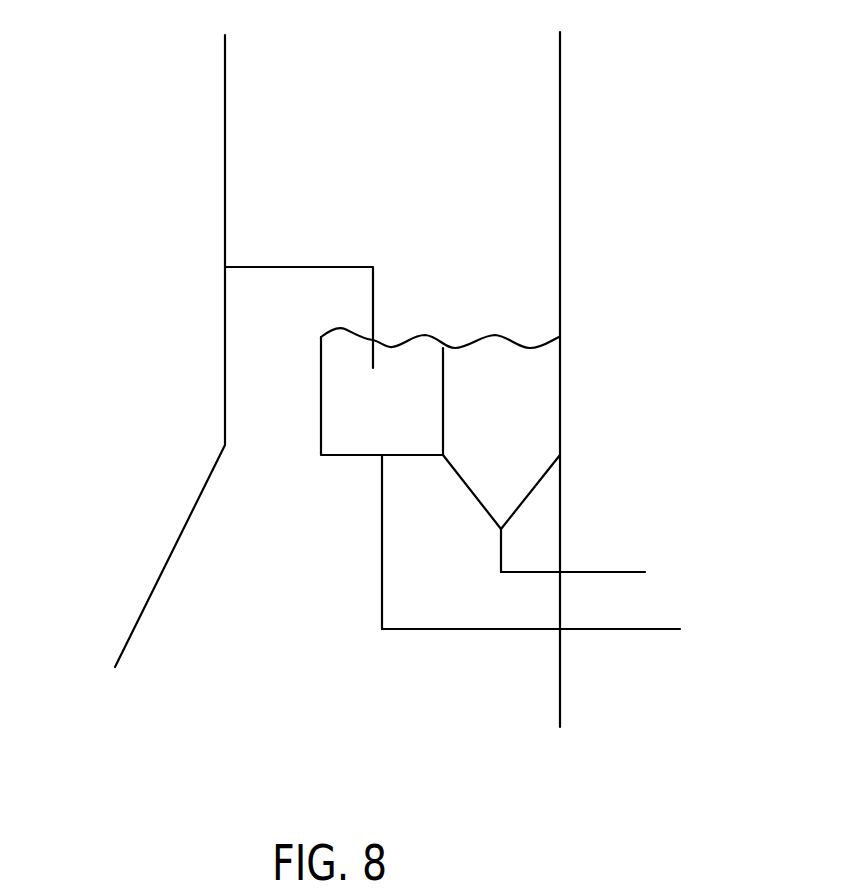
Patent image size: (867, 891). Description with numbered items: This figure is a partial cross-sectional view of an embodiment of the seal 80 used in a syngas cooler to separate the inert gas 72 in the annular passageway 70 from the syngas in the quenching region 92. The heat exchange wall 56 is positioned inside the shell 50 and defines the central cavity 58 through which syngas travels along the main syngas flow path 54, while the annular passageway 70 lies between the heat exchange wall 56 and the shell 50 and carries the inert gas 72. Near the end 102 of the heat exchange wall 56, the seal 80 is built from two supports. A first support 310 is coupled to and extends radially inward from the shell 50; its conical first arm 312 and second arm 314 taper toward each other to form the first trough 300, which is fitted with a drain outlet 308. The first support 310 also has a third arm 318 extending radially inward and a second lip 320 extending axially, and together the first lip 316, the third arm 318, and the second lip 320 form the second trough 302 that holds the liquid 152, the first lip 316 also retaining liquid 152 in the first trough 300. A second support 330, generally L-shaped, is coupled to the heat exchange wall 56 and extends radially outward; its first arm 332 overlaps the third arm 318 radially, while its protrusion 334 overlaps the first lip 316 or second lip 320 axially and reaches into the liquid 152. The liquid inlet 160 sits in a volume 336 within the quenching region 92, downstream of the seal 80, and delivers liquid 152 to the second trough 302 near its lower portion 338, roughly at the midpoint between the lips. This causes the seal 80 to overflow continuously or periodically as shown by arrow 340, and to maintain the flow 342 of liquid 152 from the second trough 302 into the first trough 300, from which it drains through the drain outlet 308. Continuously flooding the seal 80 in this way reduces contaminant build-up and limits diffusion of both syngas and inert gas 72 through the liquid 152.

The shell 50 is at (560, 52).
The main syngas flow path 54 is at (147, 143).
The heat exchange wall 56 is at (225, 53).
The central cavity 58 is at (177, 50).
The annular passageway 70 is at (300, 108).
The inert gas 72 is at (434, 94).
The seal 80 is at (597, 372).
The quenching region 92 is at (498, 755).
The end of the heat exchange wall 102 is at (225, 445).
The liquid 152 is at (440, 391).
The liquid inlet 160 is at (495, 630).
The first trough 300 is at (438, 578).
The second trough 302 is at (288, 462).
The drain outlet 308 is at (608, 572).
The first support 310 is at (459, 520).
The first arm 312 is at (493, 523).
The second arm 314 is at (538, 485).
The first lip 316 is at (443, 420).
The third arm 318 is at (350, 455).
The second lip 320 is at (321, 400).
The second support 330 is at (380, 228).
The first arm of the second support 332 is at (298, 267).
The protrusion 334 is at (373, 289).
The volume 336 is at (331, 576).
The lower portion of the second trough 338 is at (385, 458).
The overflow arrow 340 is at (327, 312).
The flow 342 is at (459, 324).